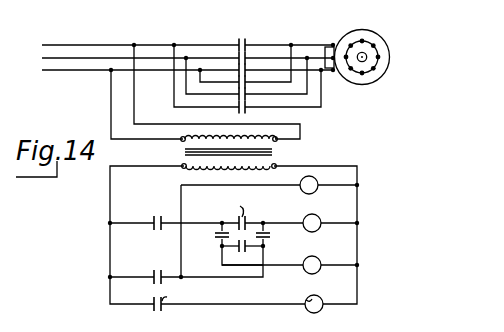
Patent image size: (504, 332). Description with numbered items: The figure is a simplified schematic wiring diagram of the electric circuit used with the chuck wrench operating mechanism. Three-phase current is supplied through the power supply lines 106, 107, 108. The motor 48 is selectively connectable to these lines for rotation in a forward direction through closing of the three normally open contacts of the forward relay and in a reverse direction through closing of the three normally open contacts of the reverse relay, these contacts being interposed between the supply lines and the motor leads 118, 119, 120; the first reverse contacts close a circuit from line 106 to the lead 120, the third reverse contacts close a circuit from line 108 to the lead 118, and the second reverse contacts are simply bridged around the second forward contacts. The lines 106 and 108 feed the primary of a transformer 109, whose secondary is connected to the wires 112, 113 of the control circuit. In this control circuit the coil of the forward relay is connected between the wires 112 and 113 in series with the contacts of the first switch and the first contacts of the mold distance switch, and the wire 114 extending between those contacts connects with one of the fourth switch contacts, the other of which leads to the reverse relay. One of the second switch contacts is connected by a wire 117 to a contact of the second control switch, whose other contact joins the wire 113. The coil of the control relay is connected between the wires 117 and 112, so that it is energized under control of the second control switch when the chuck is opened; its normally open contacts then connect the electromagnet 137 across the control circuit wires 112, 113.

The power supply line 106 is at (92, 44).
The power supply line 107 is at (51, 58).
The power supply line 108 is at (83, 71).
The motor lead 118 is at (316, 40).
The motor 48 is at (380, 28).
The motor lead 119 is at (333, 44).
The motor lead 120 is at (334, 71).
The transformer 109 is at (287, 154).
The control circuit wire 113 is at (109, 265).
The wire 114 is at (268, 217).
The wire 117 is at (242, 283).
The control circuit wire 112 is at (358, 242).
The electromagnet 137 is at (307, 300).